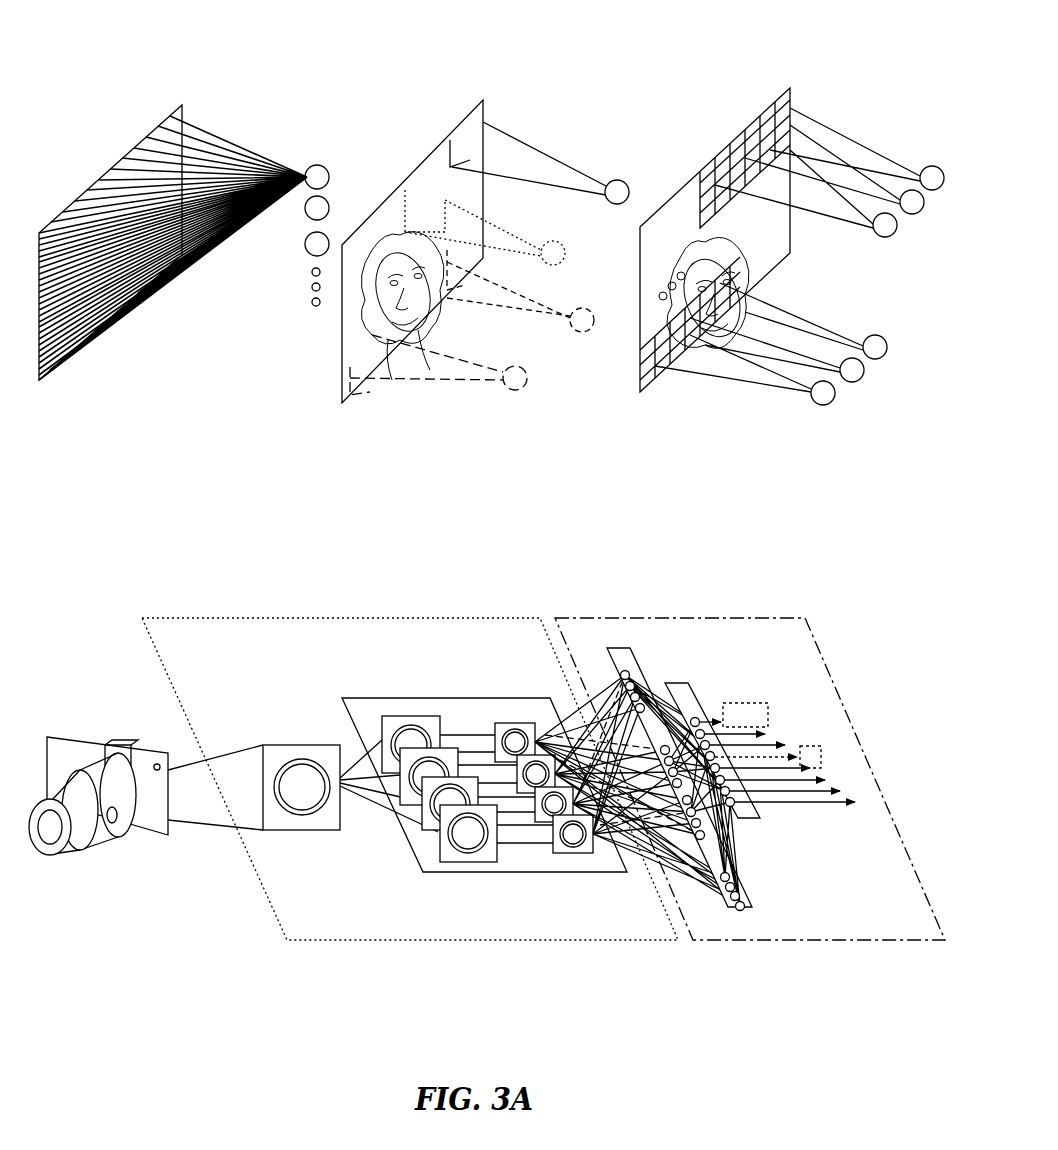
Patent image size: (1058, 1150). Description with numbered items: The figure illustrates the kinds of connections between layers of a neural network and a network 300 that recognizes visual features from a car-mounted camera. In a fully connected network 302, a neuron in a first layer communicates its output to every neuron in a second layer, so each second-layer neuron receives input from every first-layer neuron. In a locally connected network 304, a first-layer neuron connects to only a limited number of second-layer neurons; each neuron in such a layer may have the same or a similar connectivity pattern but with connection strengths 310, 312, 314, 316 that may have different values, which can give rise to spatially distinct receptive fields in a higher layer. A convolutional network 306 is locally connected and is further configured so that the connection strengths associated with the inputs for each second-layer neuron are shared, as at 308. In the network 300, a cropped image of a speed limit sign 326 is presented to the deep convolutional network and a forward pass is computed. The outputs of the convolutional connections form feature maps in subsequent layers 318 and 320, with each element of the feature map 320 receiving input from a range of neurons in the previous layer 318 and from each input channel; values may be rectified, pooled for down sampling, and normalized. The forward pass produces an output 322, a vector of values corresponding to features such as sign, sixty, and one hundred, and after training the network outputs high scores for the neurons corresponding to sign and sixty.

The network 300 is at (203, 577).
The fully connected network 302 is at (176, 62).
The locally connected network 304 is at (470, 62).
The convolutional network 306 is at (700, 62).
The shared connection strengths 308 is at (838, 217).
The connection strength 310 is at (562, 162).
The connection strength 312 is at (531, 212).
The connection strength 314 is at (535, 312).
The connection strength 316 is at (415, 375).
The feature map layer 318 is at (370, 628).
The feature map layer 320 is at (485, 628).
The output 322 is at (733, 642).
The image of a speed limit sign 326 is at (298, 745).